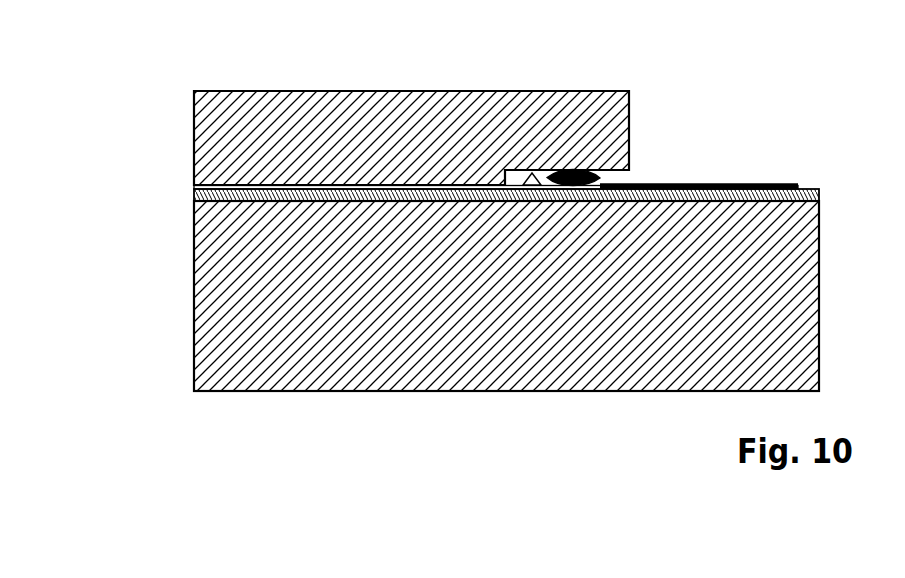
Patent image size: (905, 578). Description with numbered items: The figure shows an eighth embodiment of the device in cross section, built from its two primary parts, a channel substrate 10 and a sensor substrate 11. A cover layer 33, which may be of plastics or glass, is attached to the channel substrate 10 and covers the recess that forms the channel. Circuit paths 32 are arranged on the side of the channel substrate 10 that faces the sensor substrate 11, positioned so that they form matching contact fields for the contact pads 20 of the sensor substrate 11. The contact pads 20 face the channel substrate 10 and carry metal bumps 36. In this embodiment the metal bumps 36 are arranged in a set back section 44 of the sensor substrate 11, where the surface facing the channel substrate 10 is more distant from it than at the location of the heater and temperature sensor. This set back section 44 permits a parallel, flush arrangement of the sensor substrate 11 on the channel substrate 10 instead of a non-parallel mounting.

The channel substrate 10 is at (506, 326).
The sensor substrate 11 is at (382, 138).
The contact pad 20 is at (534, 105).
The circuit path 32 is at (507, 140).
The cover layer 33 is at (416, 212).
The metal bump 36 is at (698, 167).
The set back section 44 is at (491, 308).